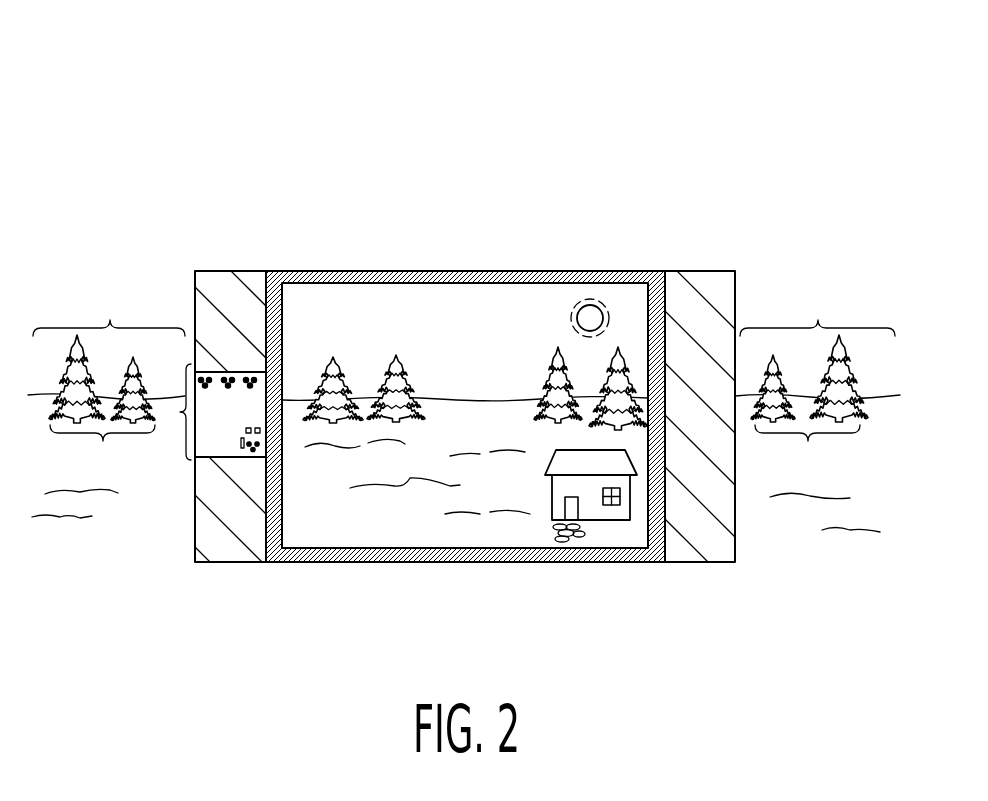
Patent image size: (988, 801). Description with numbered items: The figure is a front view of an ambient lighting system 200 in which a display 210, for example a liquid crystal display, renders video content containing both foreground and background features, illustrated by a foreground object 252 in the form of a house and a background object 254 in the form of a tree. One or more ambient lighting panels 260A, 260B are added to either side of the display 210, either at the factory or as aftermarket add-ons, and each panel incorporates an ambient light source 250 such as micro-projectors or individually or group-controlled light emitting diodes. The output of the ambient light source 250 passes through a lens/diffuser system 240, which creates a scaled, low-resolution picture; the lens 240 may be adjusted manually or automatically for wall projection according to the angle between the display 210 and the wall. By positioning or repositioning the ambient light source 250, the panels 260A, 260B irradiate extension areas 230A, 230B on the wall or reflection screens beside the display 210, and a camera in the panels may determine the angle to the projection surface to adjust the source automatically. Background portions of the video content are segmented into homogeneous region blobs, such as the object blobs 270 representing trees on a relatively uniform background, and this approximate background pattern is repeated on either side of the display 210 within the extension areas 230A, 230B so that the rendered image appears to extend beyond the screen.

The system 200 is at (149, 117).
The display 210 is at (476, 270).
The extension area 230A is at (106, 401).
The extension area 230B is at (817, 407).
The lens/diffuser system 240 is at (180, 412).
The ambient light source 250 is at (212, 458).
The foreground object 252 is at (600, 520).
The background object 254 is at (399, 360).
The ambient lighting panel 260A is at (227, 270).
The ambient lighting panel 260B is at (705, 270).
The object blobs 270 is at (458, 407).